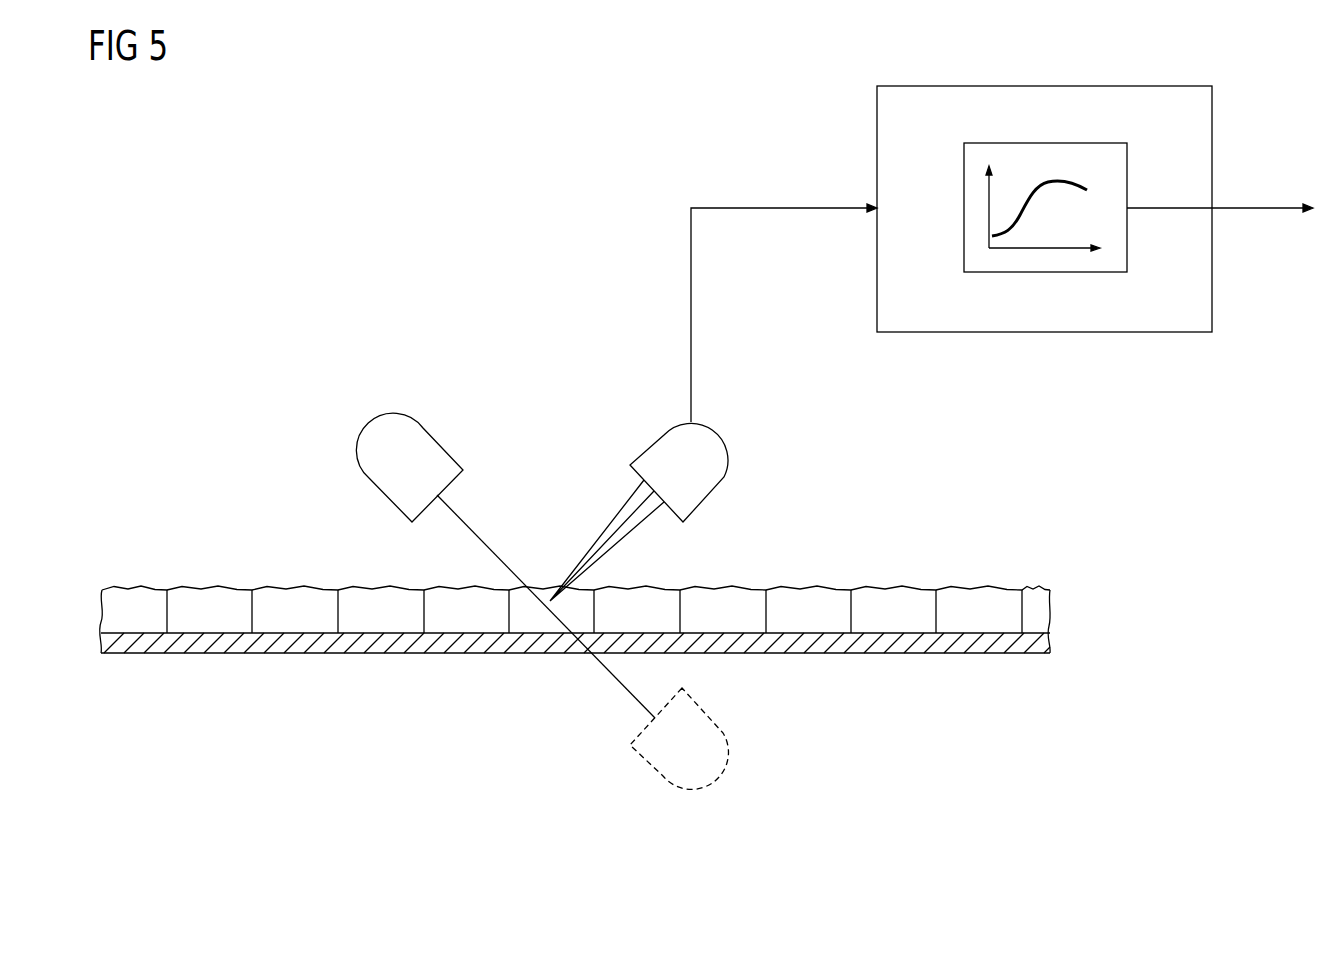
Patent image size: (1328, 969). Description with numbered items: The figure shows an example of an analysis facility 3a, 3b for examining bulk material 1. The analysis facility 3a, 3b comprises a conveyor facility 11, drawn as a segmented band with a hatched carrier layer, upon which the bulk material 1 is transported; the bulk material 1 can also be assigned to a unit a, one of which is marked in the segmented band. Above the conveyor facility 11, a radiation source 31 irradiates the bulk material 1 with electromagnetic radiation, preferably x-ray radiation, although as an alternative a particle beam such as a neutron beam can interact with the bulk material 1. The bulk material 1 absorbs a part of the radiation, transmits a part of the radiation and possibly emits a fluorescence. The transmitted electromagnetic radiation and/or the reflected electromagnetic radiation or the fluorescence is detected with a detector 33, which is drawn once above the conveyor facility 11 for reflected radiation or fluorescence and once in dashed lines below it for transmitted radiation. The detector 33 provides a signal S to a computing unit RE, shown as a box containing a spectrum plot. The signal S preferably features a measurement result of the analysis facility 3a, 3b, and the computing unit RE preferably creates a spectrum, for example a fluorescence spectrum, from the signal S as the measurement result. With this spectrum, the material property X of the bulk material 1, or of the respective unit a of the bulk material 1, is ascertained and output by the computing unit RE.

The bulk material 1 is at (599, 653).
The conveyor facility 11 is at (218, 650).
The unit a is at (808, 611).
The analysis facility 3a is at (282, 232).
The analysis facility 3b is at (491, 488).
The radiation source 31 is at (366, 456).
The detector 33 is at (720, 458).
The signal S is at (793, 207).
The computing unit RE is at (1040, 333).
The material property X is at (1220, 197).